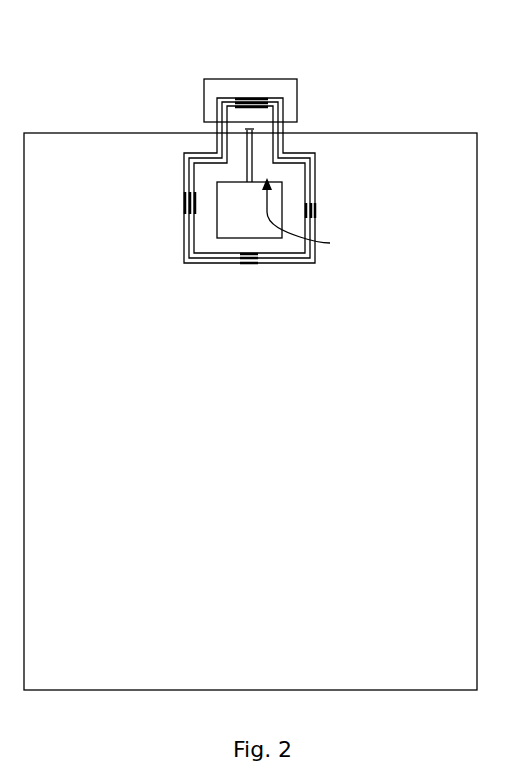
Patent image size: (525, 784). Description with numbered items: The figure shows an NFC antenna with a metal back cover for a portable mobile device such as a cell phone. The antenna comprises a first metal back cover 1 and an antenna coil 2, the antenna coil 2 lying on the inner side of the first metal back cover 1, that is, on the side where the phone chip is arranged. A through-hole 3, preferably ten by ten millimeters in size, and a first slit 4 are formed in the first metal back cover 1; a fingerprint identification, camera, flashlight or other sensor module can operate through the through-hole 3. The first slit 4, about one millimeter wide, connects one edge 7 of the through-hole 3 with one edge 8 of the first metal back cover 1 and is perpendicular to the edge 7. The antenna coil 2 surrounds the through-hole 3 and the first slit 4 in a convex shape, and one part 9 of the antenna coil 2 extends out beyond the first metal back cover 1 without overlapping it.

The first metal back cover 1 is at (356, 342).
The antenna coil 2 is at (284, 267).
The through-hole 3 is at (229, 209).
The first slit 4 is at (256, 162).
The edge of the through-hole 7 is at (306, 216).
The edge of the first metal back cover 8 is at (258, 132).
The part of the antenna coil 9 is at (204, 101).